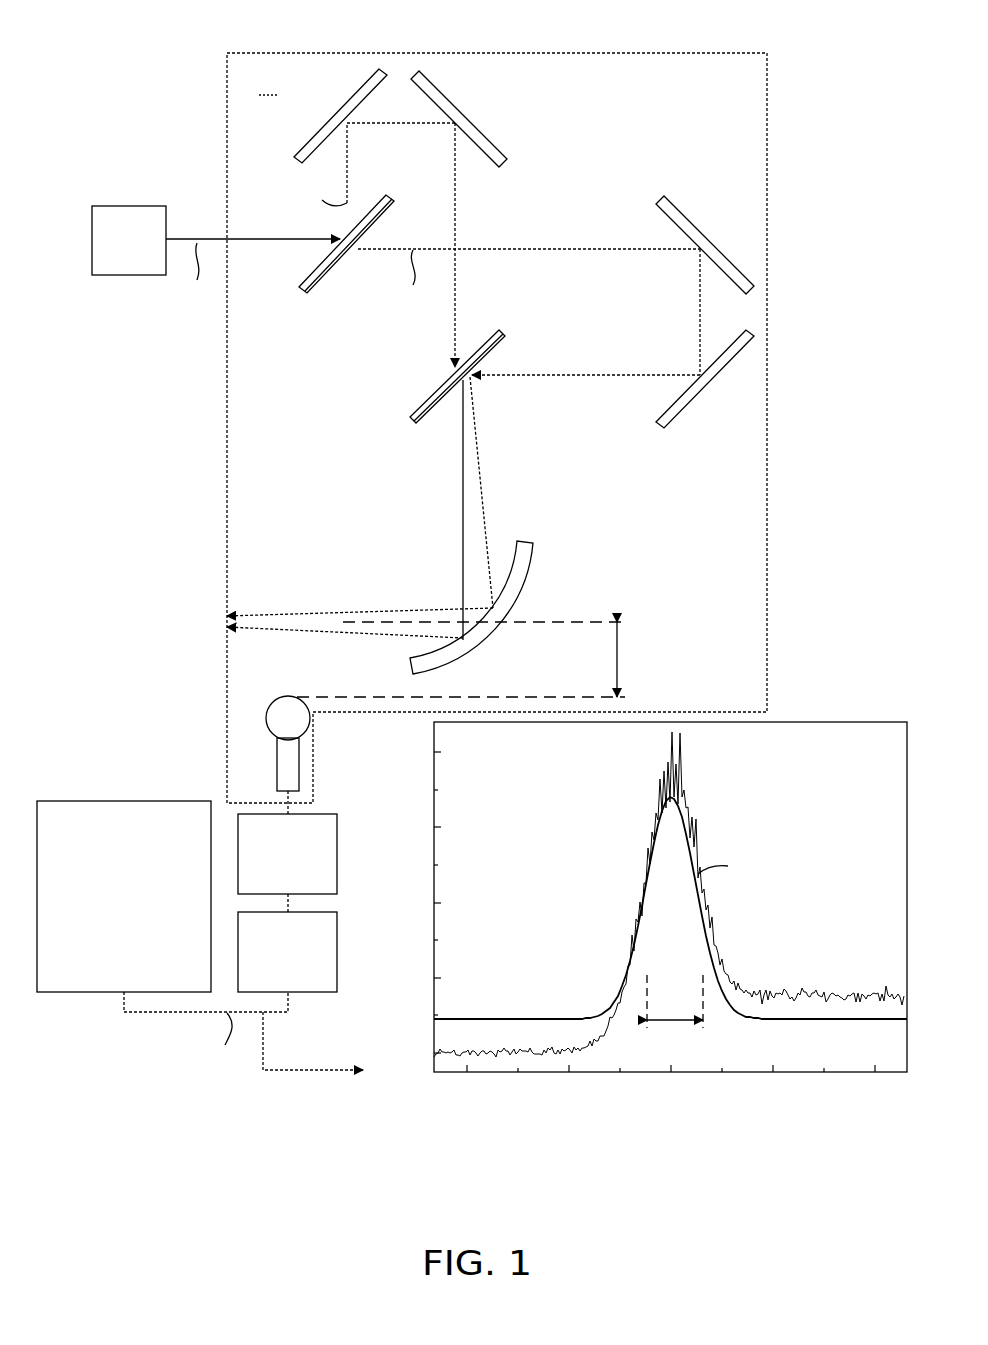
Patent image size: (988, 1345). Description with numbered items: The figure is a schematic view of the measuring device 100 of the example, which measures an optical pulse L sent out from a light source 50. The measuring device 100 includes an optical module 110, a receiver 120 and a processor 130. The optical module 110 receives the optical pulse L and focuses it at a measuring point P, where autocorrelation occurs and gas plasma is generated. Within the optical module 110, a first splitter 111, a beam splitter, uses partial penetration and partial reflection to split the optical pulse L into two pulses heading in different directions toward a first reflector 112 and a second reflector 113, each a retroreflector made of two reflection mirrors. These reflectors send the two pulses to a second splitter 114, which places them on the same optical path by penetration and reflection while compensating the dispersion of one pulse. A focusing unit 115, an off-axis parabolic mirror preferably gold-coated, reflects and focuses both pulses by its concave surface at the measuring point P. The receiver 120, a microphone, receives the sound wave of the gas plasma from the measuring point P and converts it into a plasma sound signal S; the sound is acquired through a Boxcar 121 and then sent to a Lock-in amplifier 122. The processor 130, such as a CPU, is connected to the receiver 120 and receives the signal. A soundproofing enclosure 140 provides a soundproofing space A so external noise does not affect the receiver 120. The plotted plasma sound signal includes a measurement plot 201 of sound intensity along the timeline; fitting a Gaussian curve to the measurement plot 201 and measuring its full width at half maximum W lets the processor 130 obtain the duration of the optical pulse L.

The measuring device 100 is at (93, 75).
The light source 50 is at (113, 254).
The optical module 110 is at (108, 545).
The first splitter 111 is at (310, 290).
The first reflector 112 is at (383, 72).
The second reflector 113 is at (748, 287).
The second splitter 114 is at (420, 423).
The focusing unit 115 is at (523, 562).
The receiver 120 is at (283, 762).
The Boxcar 121 is at (268, 868).
The Lock-in amplifier 122 is at (268, 962).
The processor 130 is at (104, 905).
The soundproofing enclosure 140 is at (227, 410).
The measurement plot 201 is at (650, 872).